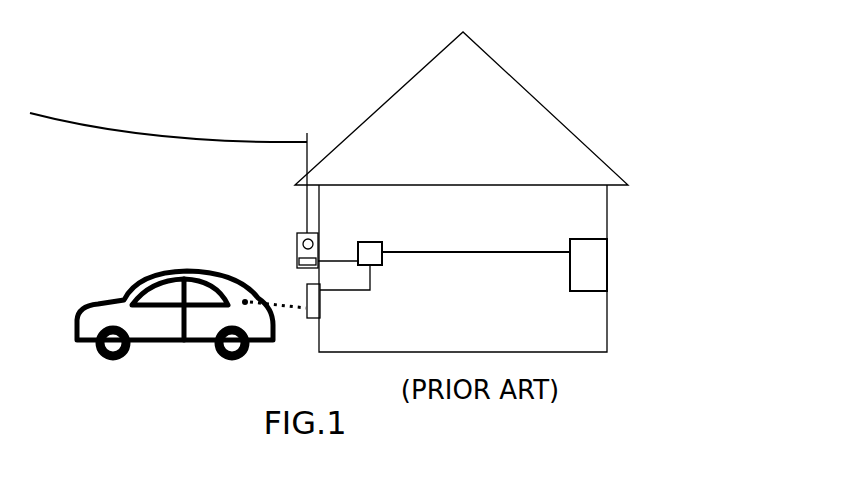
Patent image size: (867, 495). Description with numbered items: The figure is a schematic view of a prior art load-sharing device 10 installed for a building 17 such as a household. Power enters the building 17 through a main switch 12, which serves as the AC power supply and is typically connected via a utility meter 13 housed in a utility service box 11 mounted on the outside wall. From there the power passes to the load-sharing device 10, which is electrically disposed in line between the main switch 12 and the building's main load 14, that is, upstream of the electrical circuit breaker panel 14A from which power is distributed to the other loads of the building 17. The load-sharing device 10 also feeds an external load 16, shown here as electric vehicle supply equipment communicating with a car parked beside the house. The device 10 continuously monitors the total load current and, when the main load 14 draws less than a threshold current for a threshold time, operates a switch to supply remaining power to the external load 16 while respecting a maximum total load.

The load-sharing device 10 is at (383, 234).
The utility service box 11 is at (297, 233).
The main switch 12 is at (299, 261).
The utility meter 13 is at (297, 245).
The main load 14 is at (593, 242).
The electrical circuit breaker panel 14A is at (587, 263).
The external load 16 is at (310, 318).
The building 17 is at (557, 118).